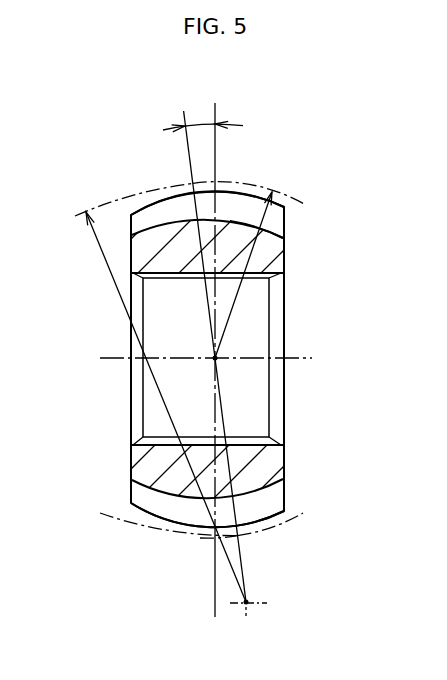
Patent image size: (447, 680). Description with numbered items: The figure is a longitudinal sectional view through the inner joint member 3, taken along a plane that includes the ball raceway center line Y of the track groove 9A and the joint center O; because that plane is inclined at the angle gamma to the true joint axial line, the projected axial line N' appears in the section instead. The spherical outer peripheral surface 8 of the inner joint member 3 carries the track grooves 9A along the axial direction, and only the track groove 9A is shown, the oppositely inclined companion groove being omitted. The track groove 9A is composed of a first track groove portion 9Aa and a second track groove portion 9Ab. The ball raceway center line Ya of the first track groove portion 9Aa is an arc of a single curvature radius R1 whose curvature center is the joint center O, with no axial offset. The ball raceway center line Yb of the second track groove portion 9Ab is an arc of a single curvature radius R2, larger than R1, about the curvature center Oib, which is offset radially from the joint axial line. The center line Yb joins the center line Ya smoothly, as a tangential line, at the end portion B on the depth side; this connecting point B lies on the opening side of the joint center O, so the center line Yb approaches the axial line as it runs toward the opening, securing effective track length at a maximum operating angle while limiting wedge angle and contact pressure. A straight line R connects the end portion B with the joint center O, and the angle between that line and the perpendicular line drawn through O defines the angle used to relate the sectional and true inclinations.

The inner joint member 3 is at (287, 460).
The spherical outer peripheral surface 8 is at (258, 522).
The track groove 9A is at (225, 217).
The first track groove portion 9Aa is at (282, 221).
The second track groove portion 9Ab is at (150, 227).
The end portion B is at (195, 192).
The joint axial line projected onto the plane N' is at (207, 358).
The joint center O is at (208, 373).
The curvature center Oib is at (250, 605).
The straight line R is at (208, 302).
The curvature radius R1 is at (233, 302).
The curvature radius R2 is at (162, 394).
The ball raceway center line Y is at (212, 537).
The ball raceway center line Ya is at (287, 523).
The ball raceway center line Yb is at (145, 528).